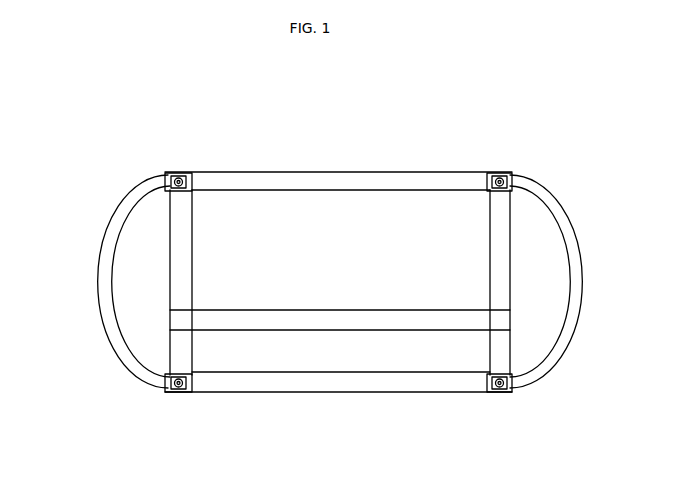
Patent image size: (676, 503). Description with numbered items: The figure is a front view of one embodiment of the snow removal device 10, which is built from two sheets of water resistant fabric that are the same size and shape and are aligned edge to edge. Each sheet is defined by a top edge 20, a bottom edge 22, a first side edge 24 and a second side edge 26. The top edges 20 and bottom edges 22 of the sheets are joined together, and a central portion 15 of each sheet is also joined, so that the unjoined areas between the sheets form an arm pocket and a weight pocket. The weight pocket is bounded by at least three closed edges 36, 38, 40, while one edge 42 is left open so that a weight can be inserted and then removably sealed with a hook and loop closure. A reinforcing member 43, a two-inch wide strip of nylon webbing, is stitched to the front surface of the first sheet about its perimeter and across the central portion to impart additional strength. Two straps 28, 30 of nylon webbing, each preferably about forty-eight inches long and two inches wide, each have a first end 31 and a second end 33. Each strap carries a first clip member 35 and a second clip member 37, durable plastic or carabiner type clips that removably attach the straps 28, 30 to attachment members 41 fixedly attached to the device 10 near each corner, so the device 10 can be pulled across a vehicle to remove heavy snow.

The snow removal device 10 is at (408, 108).
The central portion 15 is at (436, 384).
The top edge 20 is at (338, 152).
The bottom edge 22 is at (338, 414).
The first side edge 24 is at (129, 280).
The second side edge 26 is at (553, 272).
The strap 28 is at (102, 281).
The strap 30 is at (576, 281).
The first end 31 is at (141, 157).
The second end 33 is at (140, 403).
The first clip member 35 is at (343, 144).
The second clip member 37 is at (293, 430).
The closed edge 36 is at (340, 392).
The closed edge 38 is at (508, 393).
The closed edge 40 is at (237, 395).
The attachment member 41 is at (385, 300).
The open edge 42 is at (541, 359).
The reinforcing member 43 is at (332, 301).